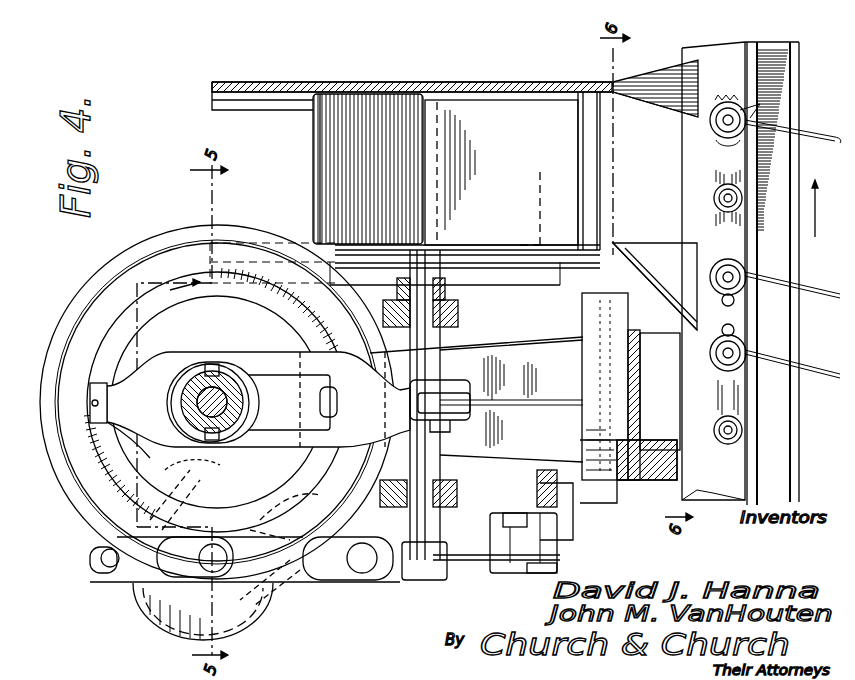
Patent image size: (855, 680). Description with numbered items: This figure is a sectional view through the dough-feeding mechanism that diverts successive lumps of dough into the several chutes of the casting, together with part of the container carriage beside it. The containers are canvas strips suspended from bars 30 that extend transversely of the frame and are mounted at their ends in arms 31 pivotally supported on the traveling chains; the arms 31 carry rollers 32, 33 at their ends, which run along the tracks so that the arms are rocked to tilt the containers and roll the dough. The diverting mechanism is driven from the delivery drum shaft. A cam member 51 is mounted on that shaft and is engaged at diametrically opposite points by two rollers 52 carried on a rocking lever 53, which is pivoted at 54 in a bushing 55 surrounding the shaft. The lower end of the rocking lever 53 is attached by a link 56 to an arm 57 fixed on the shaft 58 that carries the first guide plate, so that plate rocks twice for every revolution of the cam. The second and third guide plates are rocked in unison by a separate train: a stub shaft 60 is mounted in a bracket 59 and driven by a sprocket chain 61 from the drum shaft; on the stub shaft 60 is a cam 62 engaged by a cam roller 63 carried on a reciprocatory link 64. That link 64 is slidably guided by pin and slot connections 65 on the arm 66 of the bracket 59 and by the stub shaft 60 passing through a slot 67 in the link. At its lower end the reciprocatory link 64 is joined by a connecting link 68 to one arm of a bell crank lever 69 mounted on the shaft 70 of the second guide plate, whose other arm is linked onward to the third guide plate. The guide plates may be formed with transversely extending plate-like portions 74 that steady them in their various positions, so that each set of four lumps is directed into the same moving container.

The bars 30 is at (750, 273).
The arms 31 is at (722, 158).
The rollers 32 is at (766, 103).
The rollers 33 is at (765, 327).
The cam member 51 is at (167, 288).
The rollers 52 is at (96, 395).
The rocking lever 53 is at (190, 365).
The pivot 54 is at (205, 364).
The bushing 55 is at (182, 405).
The link 56 is at (505, 408).
The arm 57 is at (442, 392).
The shaft 58 is at (438, 540).
The bracket 59 is at (287, 515).
The stub shaft 60 is at (245, 605).
The sprocket chain 61 is at (137, 535).
The cam 62 is at (176, 612).
The cam roller 63 is at (108, 575).
The reciprocatory link 64 is at (326, 583).
The pin and slot connections 65 is at (332, 576).
The arm 66 is at (405, 578).
The slot 67 is at (325, 185).
The connecting link 68 is at (472, 562).
The bell crank lever 69 is at (501, 172).
The shaft 70 is at (283, 88).
The plate-like portions 74 is at (528, 250).